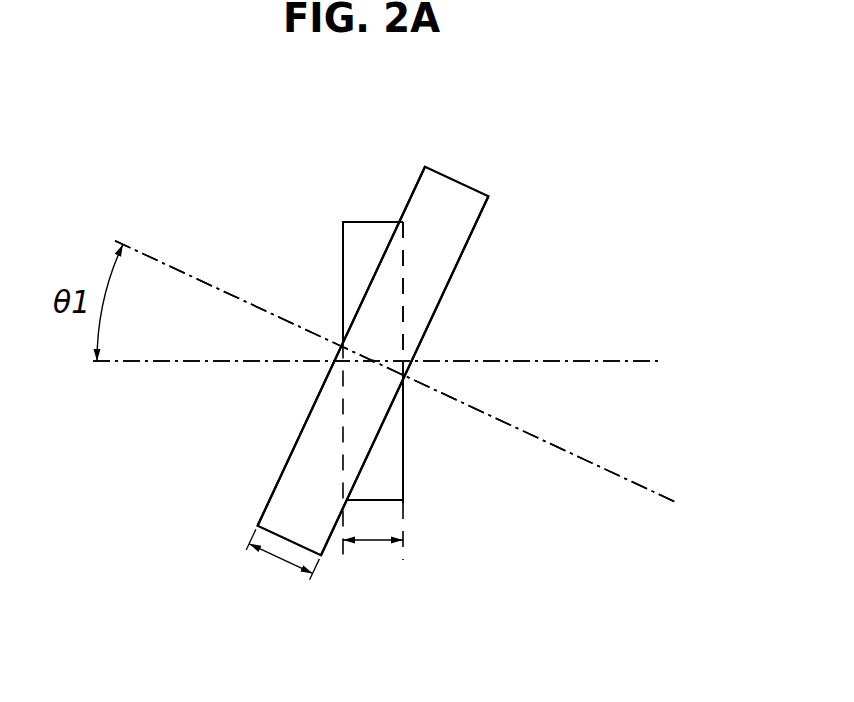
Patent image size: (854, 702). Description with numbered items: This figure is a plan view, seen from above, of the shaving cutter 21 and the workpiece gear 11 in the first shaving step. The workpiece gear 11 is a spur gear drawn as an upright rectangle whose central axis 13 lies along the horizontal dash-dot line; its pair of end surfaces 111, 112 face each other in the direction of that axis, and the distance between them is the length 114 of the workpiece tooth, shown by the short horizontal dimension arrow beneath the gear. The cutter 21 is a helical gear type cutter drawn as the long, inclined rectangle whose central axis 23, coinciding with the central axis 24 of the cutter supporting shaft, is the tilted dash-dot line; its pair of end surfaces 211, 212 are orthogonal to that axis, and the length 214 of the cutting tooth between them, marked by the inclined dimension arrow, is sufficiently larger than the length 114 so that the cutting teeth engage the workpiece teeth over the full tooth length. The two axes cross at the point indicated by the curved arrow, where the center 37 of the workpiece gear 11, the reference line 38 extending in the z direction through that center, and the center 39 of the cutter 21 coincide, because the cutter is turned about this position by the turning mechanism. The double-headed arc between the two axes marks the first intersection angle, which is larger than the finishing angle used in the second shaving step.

The workpiece gear 11 is at (406, 476).
The end surface 111 is at (342, 247).
The end surface 112 is at (420, 278).
The length of the workpiece tooth 114 is at (373, 545).
The shaving cutter 21 is at (452, 178).
The end surface 211 is at (417, 180).
The end surface 212 is at (487, 208).
The length of the cutting tooth 214 is at (283, 563).
The central axis of the workpiece gear 13 is at (630, 360).
The central axis of the cutter 23 is at (652, 488).
The central axis of the cutter supporting shaft 24 is at (395, 371).
The center of the workpiece gear 37 is at (370, 363).
The reference line 38 is at (373, 361).
The center of the cutter 39 is at (373, 361).